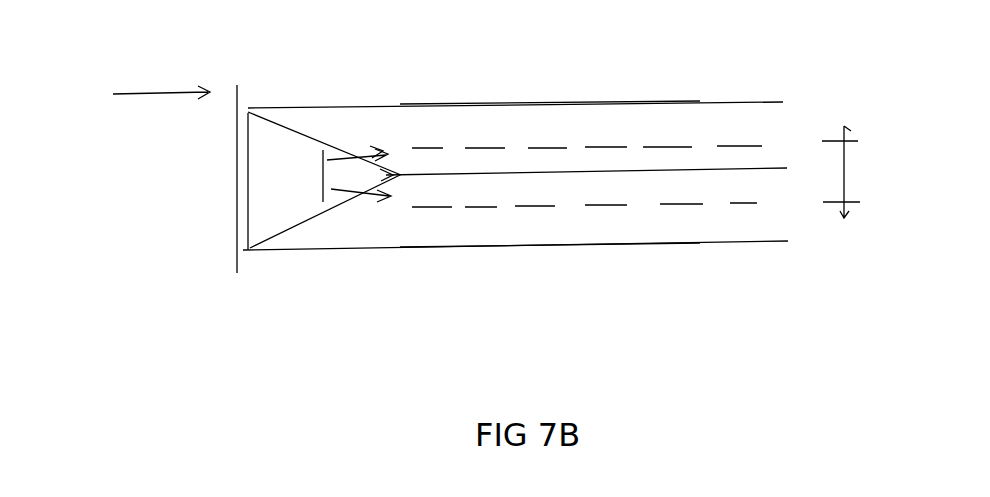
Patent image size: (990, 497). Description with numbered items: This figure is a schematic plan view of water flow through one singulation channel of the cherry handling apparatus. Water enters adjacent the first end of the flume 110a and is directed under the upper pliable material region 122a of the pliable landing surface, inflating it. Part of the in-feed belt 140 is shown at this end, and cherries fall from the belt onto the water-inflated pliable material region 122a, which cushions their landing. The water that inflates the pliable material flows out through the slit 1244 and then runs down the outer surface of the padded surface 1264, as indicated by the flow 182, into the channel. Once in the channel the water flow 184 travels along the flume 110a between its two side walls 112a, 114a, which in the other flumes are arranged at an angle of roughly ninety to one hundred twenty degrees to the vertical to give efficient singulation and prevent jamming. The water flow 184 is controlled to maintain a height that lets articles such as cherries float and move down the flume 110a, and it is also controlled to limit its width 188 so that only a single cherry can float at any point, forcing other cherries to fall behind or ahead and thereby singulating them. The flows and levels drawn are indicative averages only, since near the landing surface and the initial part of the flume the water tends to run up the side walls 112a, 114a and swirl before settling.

The in-feed belt 140 is at (218, 200).
The upper pliable material region 122a is at (273, 135).
The singulation flume 110a is at (682, 270).
The side wall 112a is at (748, 117).
The side wall 114a is at (771, 228).
The water flow in the flume 184 is at (600, 143).
The slit 1244 is at (321, 183).
The padded surface 1264 is at (400, 174).
The flow down the padded surface 182 is at (373, 143).
The width of the water flow 188 is at (852, 177).